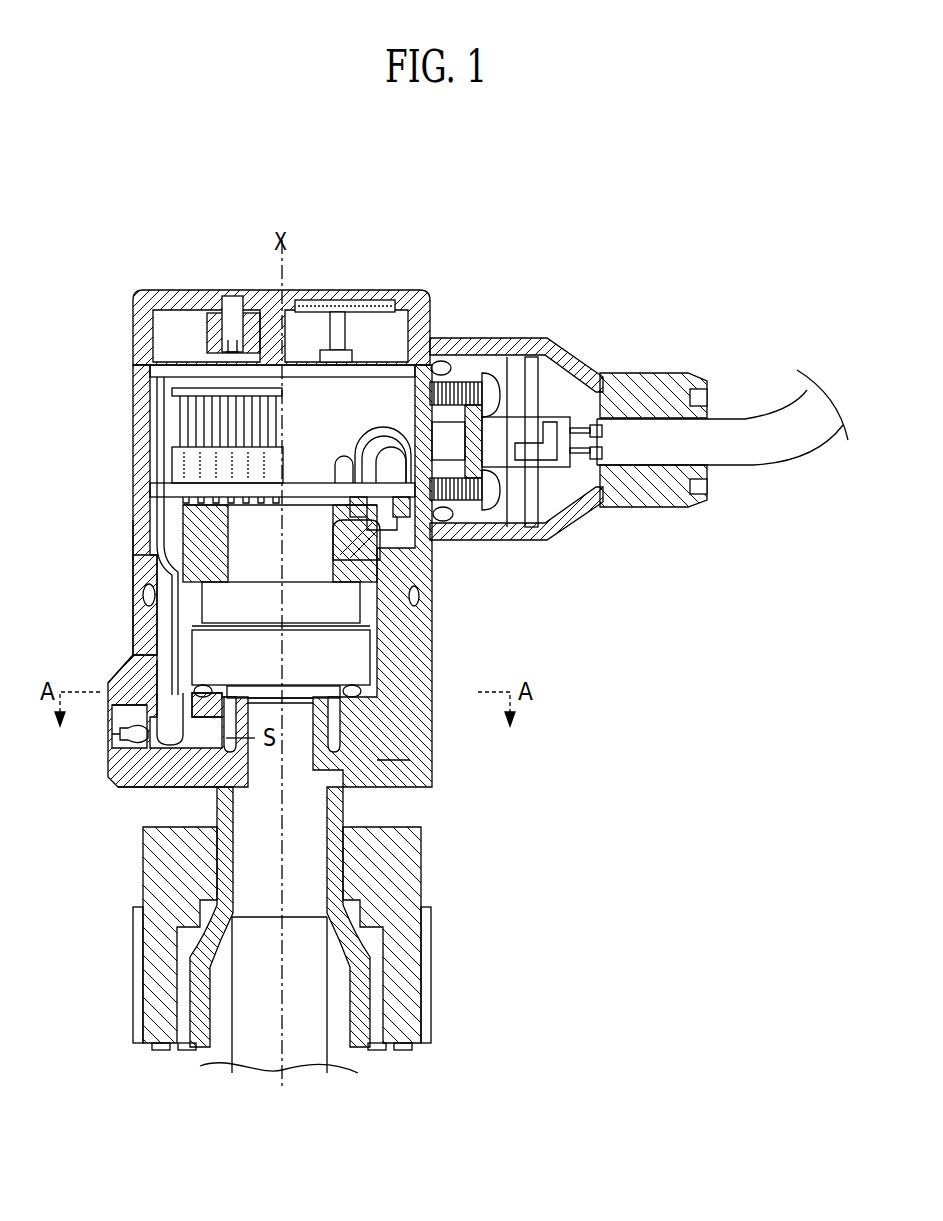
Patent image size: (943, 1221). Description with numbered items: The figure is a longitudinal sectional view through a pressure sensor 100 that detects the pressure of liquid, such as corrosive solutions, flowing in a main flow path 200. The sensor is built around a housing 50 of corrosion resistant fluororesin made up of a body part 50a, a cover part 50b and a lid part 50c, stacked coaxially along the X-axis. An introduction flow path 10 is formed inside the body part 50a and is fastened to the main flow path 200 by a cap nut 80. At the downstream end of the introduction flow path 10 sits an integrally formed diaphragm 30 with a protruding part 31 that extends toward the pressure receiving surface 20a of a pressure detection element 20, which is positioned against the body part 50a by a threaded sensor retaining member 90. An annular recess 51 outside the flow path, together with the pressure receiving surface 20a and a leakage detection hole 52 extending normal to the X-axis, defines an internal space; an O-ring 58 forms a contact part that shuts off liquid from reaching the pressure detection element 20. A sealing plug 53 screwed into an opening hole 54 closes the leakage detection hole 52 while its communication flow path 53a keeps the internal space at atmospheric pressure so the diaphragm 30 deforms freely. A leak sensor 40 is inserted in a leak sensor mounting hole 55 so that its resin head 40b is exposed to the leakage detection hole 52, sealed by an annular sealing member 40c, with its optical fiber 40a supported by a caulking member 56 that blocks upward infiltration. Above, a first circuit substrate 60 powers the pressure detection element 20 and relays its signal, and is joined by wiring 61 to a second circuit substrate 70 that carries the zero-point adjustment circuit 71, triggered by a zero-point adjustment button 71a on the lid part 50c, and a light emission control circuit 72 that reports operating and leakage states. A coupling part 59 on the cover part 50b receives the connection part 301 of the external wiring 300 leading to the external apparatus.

The pressure sensor 100 is at (538, 188).
The introduction flow path 10 is at (304, 809).
The pressure detection element 20 is at (362, 649).
The pressure receiving surface 20a is at (294, 690).
The diaphragm 30 is at (302, 700).
The protruding part 31 is at (284, 692).
The leak sensor 40 is at (143, 643).
The optical fiber 40a is at (140, 543).
The resin head 40b is at (152, 668).
The annular sealing member 40c is at (208, 701).
The housing 50 is at (530, 475).
The body part 50a is at (430, 677).
The cover part 50b is at (430, 568).
The lid part 50c is at (497, 545).
The annular recess 51 is at (398, 766).
The leakage detection hole 52 is at (201, 779).
The sealing plug 53 is at (108, 762).
The communication flow path 53a is at (112, 735).
The opening hole 54 is at (136, 787).
The leak sensor mounting hole 55 is at (137, 667).
The caulking member 56 is at (201, 619).
The O-ring 58 is at (342, 692).
The coupling part 59 is at (520, 426).
The first circuit substrate 60 is at (166, 488).
The wiring 61 is at (205, 410).
The second circuit substrate 70 is at (170, 365).
The zero-point adjustment circuit 71 is at (346, 356).
The zero-point adjustment button 71a is at (331, 300).
The light emission control circuit 72 is at (236, 348).
The cap nut 80 is at (400, 944).
The sensor retaining member 90 is at (346, 526).
The main flow path 200 is at (304, 995).
The external wiring 300 is at (762, 430).
The connection part 301 is at (497, 338).